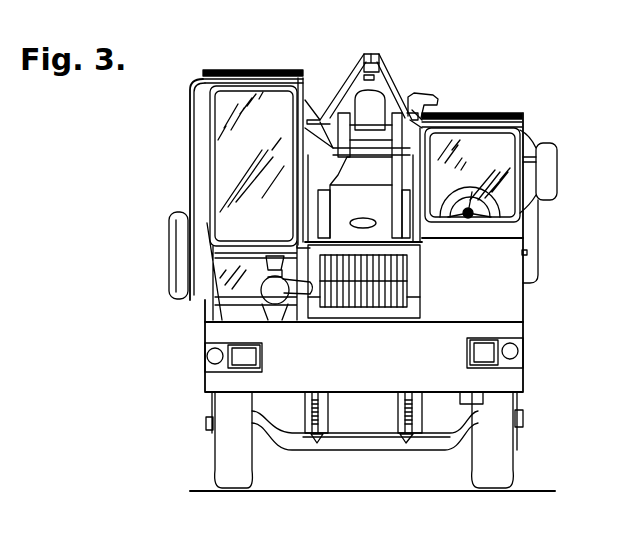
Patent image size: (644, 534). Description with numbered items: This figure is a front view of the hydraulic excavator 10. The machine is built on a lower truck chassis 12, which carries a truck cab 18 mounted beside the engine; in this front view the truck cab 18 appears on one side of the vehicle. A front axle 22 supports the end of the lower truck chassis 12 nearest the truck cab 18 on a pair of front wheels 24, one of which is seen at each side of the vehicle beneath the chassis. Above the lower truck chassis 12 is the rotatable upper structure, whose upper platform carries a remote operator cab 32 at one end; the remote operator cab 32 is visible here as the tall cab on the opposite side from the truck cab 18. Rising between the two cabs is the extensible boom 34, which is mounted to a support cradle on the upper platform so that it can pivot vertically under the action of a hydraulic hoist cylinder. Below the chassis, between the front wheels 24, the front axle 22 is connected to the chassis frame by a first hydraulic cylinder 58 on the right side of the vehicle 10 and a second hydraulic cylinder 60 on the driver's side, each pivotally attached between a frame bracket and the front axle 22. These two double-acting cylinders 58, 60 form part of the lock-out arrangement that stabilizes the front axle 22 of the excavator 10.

The excavator 10 is at (541, 293).
The lower truck chassis 12 is at (526, 373).
The truck cab 18 is at (513, 228).
The front axle 22 is at (358, 440).
The front wheels 24 is at (233, 458).
The remote operator cab 32 is at (207, 163).
The extensible boom 34 is at (378, 61).
The first hydraulic cylinder 58 is at (323, 400).
The second hydraulic cylinder 60 is at (402, 400).